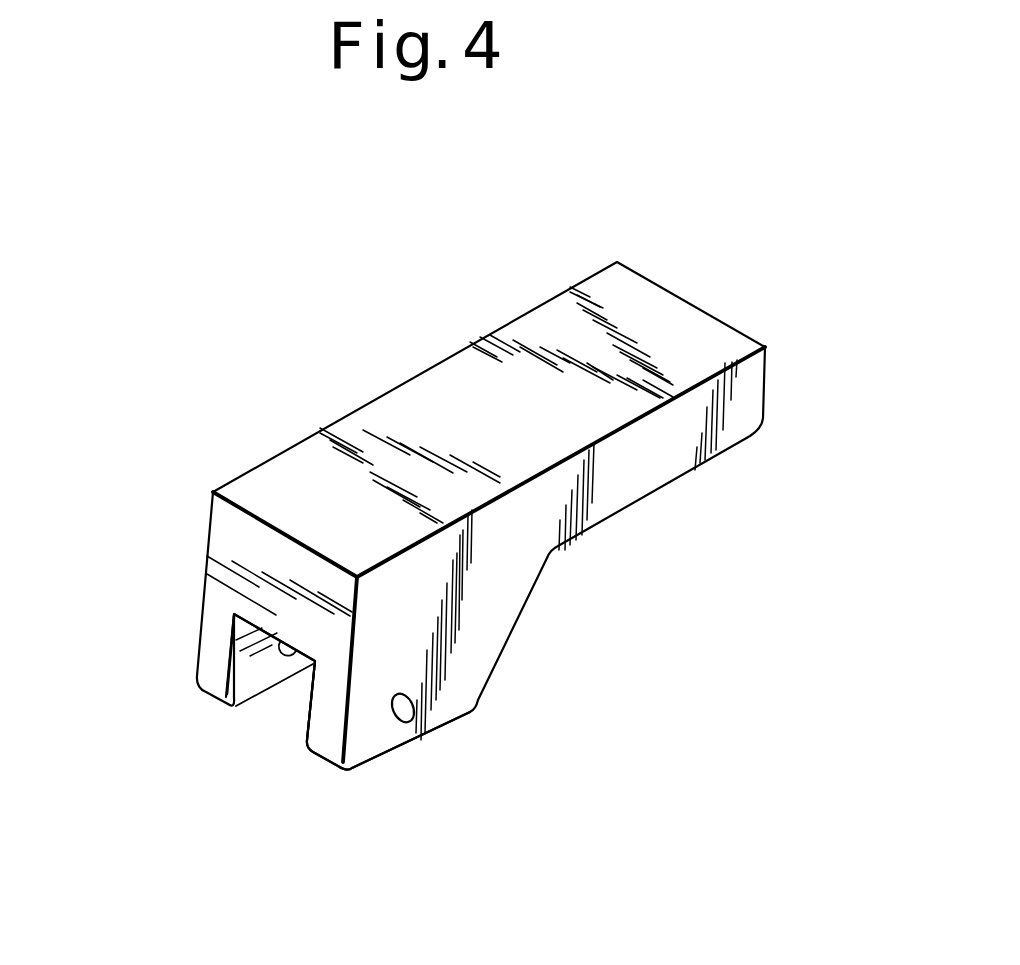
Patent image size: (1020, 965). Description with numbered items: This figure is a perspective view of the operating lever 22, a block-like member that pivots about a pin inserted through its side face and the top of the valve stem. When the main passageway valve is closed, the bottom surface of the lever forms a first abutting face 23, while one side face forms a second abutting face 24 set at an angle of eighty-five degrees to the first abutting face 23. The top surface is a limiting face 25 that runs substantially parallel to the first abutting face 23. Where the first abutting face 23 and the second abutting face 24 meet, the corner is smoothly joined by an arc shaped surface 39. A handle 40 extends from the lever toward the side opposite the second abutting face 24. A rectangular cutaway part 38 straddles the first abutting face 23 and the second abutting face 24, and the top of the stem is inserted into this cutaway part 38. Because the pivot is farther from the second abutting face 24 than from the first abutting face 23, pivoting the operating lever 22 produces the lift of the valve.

The operating lever 22 is at (471, 603).
The first abutting face 23 is at (387, 760).
The second abutting face 24 is at (263, 585).
The limiting face 25 is at (350, 460).
The rectangular cutaway part 38 is at (300, 692).
The arc shaped surface 39 is at (340, 768).
The handle 40 is at (625, 467).